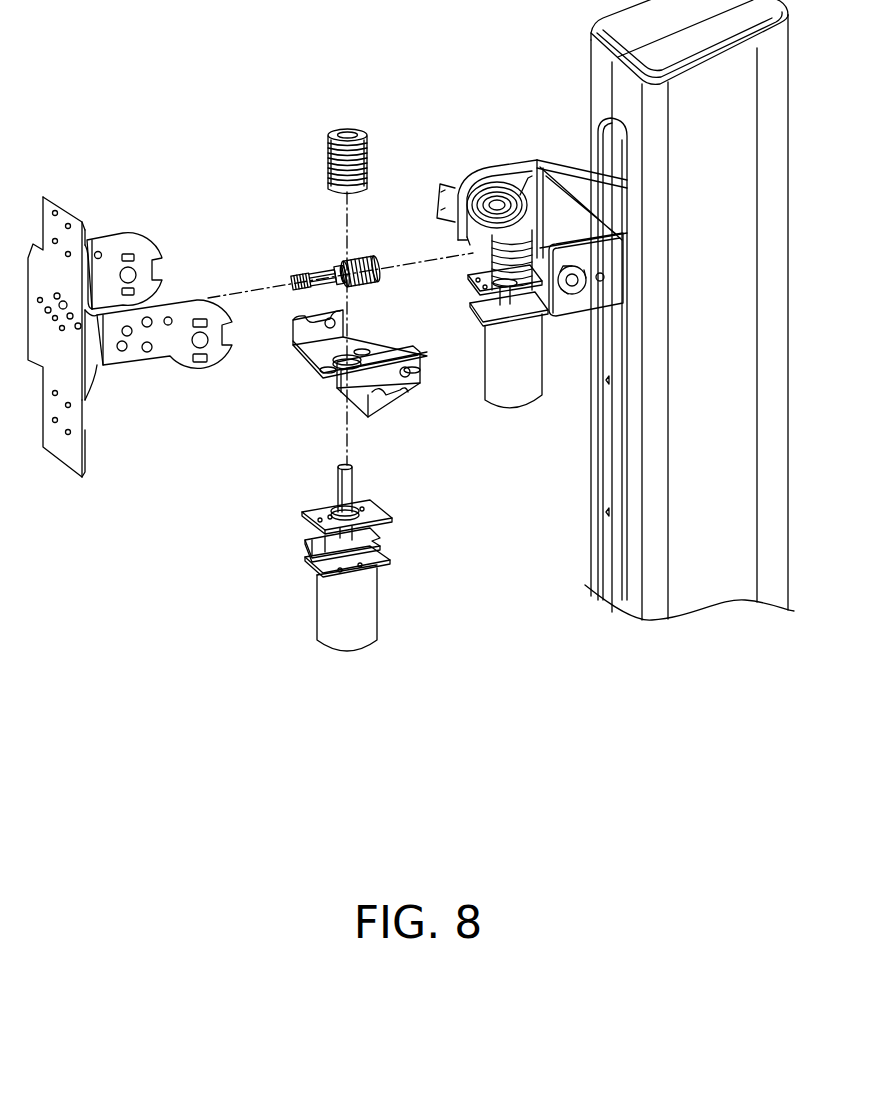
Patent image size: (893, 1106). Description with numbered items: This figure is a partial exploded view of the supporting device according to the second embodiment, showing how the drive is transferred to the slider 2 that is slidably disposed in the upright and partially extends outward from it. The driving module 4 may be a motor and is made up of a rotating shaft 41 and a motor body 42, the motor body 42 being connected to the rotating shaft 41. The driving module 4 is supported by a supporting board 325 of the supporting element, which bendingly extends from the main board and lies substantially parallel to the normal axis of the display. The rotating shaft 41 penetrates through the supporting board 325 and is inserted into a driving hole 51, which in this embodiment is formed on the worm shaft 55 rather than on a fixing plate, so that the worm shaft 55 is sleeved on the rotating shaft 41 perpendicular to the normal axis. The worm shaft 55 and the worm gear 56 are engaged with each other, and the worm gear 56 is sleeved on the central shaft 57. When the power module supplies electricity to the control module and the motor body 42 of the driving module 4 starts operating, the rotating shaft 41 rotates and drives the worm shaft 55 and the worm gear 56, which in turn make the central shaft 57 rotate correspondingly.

The slider 2 is at (527, 158).
The driving hole 51 is at (345, 129).
The worm shaft 55 is at (362, 129).
The worm gear 56 is at (362, 262).
The central shaft 57 is at (317, 276).
The supporting board 325 is at (305, 365).
The driving module 4 is at (447, 468).
The rotating shaft 41 is at (350, 487).
The motor body 42 is at (367, 606).